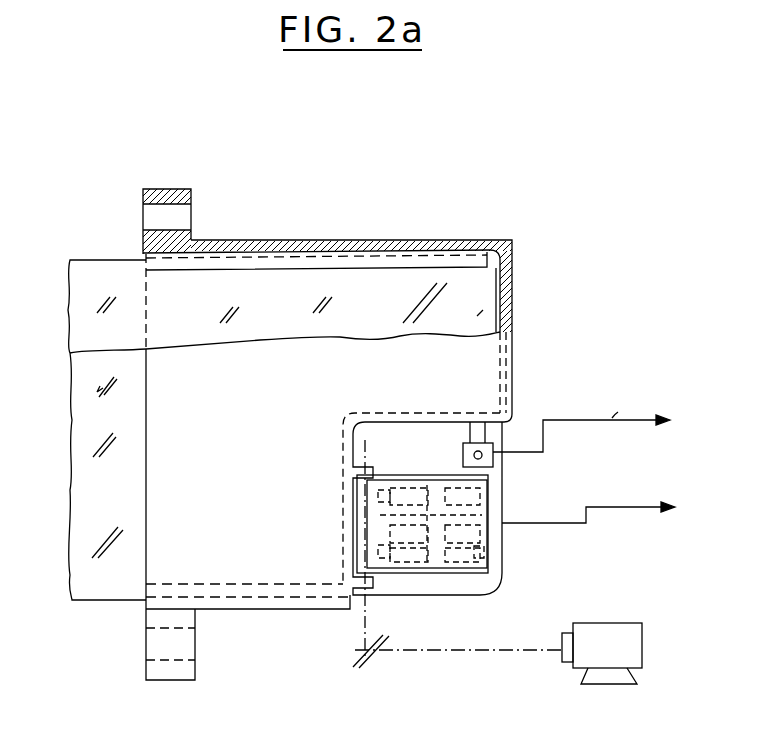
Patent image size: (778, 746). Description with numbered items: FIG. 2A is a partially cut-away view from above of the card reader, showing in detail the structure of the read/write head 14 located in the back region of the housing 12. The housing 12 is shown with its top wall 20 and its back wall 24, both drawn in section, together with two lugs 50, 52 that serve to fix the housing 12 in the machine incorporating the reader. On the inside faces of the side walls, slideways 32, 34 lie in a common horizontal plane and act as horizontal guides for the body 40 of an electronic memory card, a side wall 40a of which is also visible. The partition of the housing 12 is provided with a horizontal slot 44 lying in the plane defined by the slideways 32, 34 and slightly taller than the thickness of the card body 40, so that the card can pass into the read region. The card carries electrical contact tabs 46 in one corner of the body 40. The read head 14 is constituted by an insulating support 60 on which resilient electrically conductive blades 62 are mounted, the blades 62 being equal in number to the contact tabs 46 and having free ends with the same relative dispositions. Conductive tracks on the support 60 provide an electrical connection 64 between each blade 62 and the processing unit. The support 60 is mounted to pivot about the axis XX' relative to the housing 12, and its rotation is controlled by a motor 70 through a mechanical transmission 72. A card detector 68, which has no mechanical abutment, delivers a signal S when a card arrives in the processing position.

The housing 12 is at (359, 248).
The read/write head 14 is at (505, 555).
The top wall 20 is at (440, 246).
The back wall 24 is at (514, 282).
The slideway 32 is at (262, 262).
The slideway 34 is at (252, 600).
The body of the electronic memory card 40 is at (72, 529).
The workpiece side wall 40a is at (507, 437).
The horizontal slot 44 is at (352, 500).
The electrical contact tabs 46 is at (450, 570).
The lug 50 is at (191, 203).
The lug 52 is at (195, 665).
The insulating support 60 is at (408, 575).
The resilient electrically conductive blades 62 is at (450, 548).
The electrical connection 64 is at (613, 507).
The card detector 68 is at (463, 453).
The motor 70 is at (602, 640).
The mechanical transmission 72 is at (472, 652).